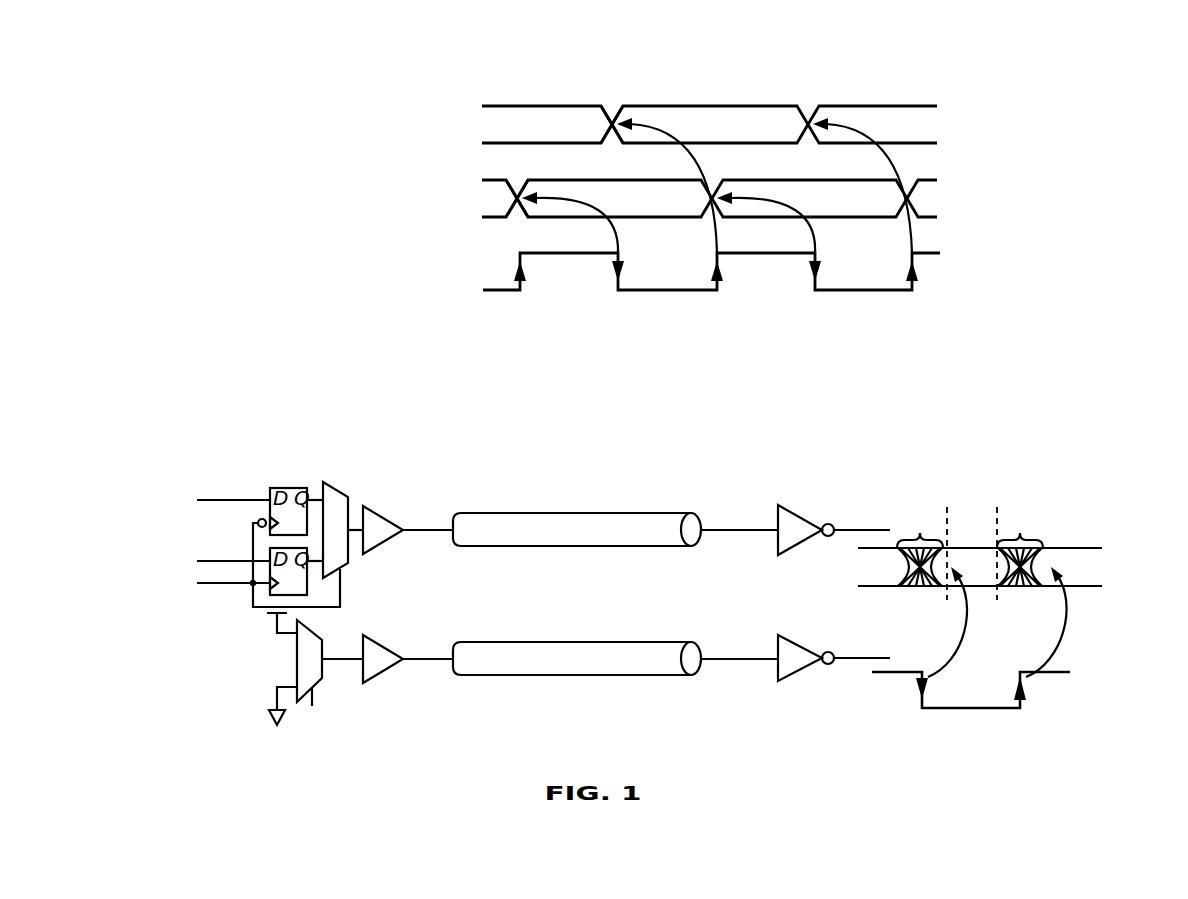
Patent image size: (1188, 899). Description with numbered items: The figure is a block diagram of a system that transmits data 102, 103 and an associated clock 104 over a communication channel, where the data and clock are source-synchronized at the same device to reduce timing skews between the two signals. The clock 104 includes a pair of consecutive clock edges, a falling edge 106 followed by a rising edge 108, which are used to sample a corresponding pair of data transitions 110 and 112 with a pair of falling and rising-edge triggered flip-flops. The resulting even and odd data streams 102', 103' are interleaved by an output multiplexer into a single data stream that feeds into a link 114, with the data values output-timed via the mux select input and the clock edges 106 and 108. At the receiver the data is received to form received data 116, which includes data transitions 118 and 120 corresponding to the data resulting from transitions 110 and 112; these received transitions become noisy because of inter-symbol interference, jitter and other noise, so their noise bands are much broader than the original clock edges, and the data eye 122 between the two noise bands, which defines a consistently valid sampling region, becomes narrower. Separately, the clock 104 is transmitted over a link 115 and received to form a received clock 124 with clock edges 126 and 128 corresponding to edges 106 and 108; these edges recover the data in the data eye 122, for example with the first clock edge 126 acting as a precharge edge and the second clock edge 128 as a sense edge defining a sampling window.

The even data 102 is at (155, 500).
The odd data 103 is at (159, 560).
The clock 104 is at (527, 505).
The even data stream 102' is at (622, 303).
The odd data stream 103' is at (622, 392).
The falling edge 106 is at (617, 292).
The rising edge 108 is at (719, 292).
The data transition 110 is at (519, 195).
The data transition 112 is at (614, 121).
The link 114 is at (615, 529).
The link 115 is at (615, 658).
The received data 116 is at (930, 567).
The data transition 118 is at (918, 527).
The data transition 120 is at (1023, 527).
The data eye 122 is at (975, 555).
The received clock 124 is at (914, 691).
The clock edge 126 is at (918, 707).
The clock edge 128 is at (1025, 706).